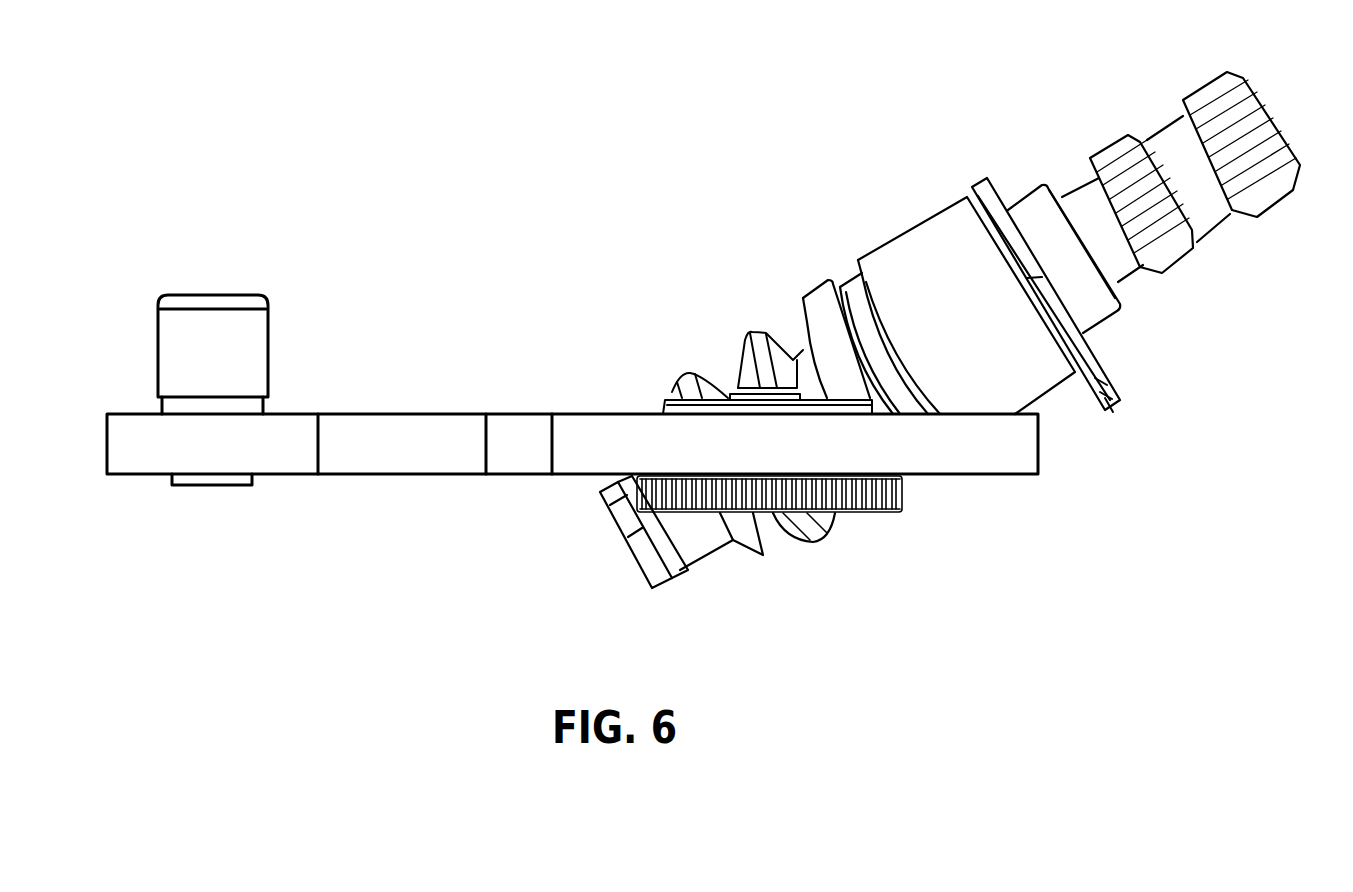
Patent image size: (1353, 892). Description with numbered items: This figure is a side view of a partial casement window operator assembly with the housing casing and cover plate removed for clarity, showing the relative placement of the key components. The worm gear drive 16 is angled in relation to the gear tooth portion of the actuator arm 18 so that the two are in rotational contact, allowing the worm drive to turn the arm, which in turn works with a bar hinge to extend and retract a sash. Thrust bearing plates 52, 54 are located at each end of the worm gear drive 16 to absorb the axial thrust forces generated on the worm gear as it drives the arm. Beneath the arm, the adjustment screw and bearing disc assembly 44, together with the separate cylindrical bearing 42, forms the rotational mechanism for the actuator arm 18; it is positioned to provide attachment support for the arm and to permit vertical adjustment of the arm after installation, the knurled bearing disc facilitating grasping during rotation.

The worm drive assembly 16 is at (930, 248).
The actuator arm 18 is at (370, 458).
The cylindrical bearing 42 is at (667, 408).
The adjustment screw and bearing disc 44 is at (878, 495).
The thrust bearing plate 52 is at (1107, 397).
The thrust bearing plate 54 is at (660, 567).